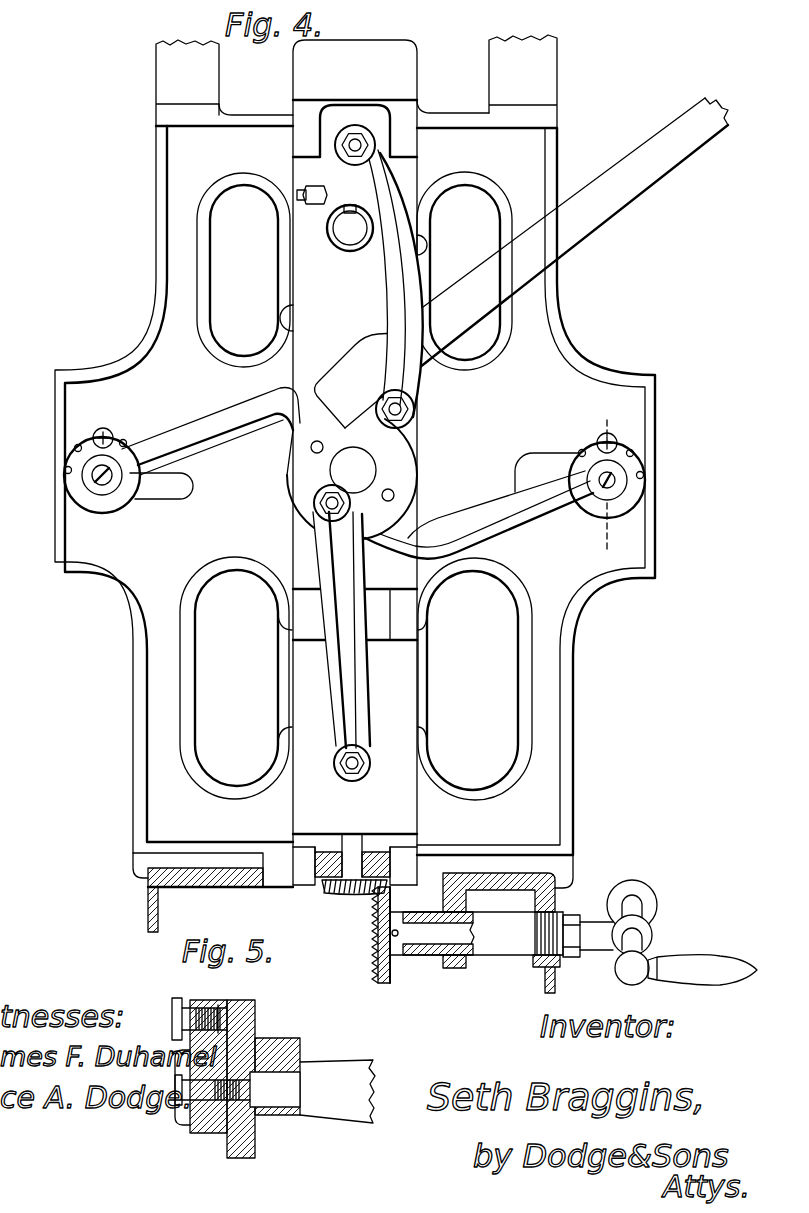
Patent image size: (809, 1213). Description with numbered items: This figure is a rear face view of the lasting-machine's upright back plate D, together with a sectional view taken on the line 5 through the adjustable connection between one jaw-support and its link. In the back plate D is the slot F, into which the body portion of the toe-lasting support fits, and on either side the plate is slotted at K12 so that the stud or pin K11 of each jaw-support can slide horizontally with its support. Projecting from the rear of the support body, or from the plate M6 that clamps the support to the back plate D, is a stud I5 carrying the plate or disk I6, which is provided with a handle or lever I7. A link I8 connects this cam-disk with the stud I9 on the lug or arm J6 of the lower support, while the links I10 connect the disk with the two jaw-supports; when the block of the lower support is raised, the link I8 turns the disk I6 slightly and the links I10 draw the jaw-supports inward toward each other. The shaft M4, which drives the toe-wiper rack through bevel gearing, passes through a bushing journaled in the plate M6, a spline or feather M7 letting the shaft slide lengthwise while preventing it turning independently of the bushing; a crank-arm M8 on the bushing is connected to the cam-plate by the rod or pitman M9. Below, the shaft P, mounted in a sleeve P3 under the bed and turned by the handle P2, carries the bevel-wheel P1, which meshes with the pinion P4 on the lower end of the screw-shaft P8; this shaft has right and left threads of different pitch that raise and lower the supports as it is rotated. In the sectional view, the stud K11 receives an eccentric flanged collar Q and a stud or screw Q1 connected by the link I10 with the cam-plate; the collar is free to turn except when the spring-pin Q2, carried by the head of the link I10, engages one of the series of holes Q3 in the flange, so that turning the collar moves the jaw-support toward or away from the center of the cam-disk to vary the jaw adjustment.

In FIG. 4, the back plate D is at (355, 483).
In FIG. 4, the slot F is at (355, 614).
In FIG. 4, the lower frame bar J6 is at (355, 802).
In FIG. 5, the stud or pin K11 is at (275, 1089).
In FIG. 4, the slot K12 is at (192, 485).
In FIG. 4, the stud I5 is at (353, 470).
In FIG. 4, the plate or disk I6 is at (352, 479).
In FIG. 4, the handle or lever I7 is at (521, 263).
In FIG. 4, the link I8 is at (341, 616).
In FIG. 4, the stud I9 is at (366, 764).
In FIG. 4, the links I10 is at (357, 473).
In FIG. 5, the links I10 is at (207, 1133).
In FIG. 4, the shaft M4 is at (350, 225).
In FIG. 4, the plate M6 is at (300, 318).
In FIG. 4, the spline or feather M7 is at (347, 215).
In FIG. 4, the crank-arm M8 is at (321, 192).
In FIG. 4, the rod or pitman M9 is at (379, 276).
In FIG. 4, the shaft P is at (476, 940).
In FIG. 4, the bevel-wheel P1 is at (373, 940).
In FIG. 4, the handle P2 is at (682, 932).
In FIG. 4, the sleeve P3 is at (551, 952).
In FIG. 4, the pinion P4 is at (343, 888).
In FIG. 4, the shaft P8 is at (353, 850).
In FIG. 4, the eccentric flanged collar Q is at (76, 490).
In FIG. 5, the eccentric flanged collar Q is at (249, 1080).
In FIG. 4, the stud or screw Q1 is at (102, 482).
In FIG. 5, the stud or screw Q1 is at (175, 1089).
In FIG. 4, the spring-pin Q2 is at (104, 436).
In FIG. 5, the spring-pin Q2 is at (177, 997).
In FIG. 4, the holes or perforations Q3 is at (64, 470).
In FIG. 5, the holes or perforations Q3 is at (257, 1016).
In FIG. 4, the section line 5 is at (605, 478).